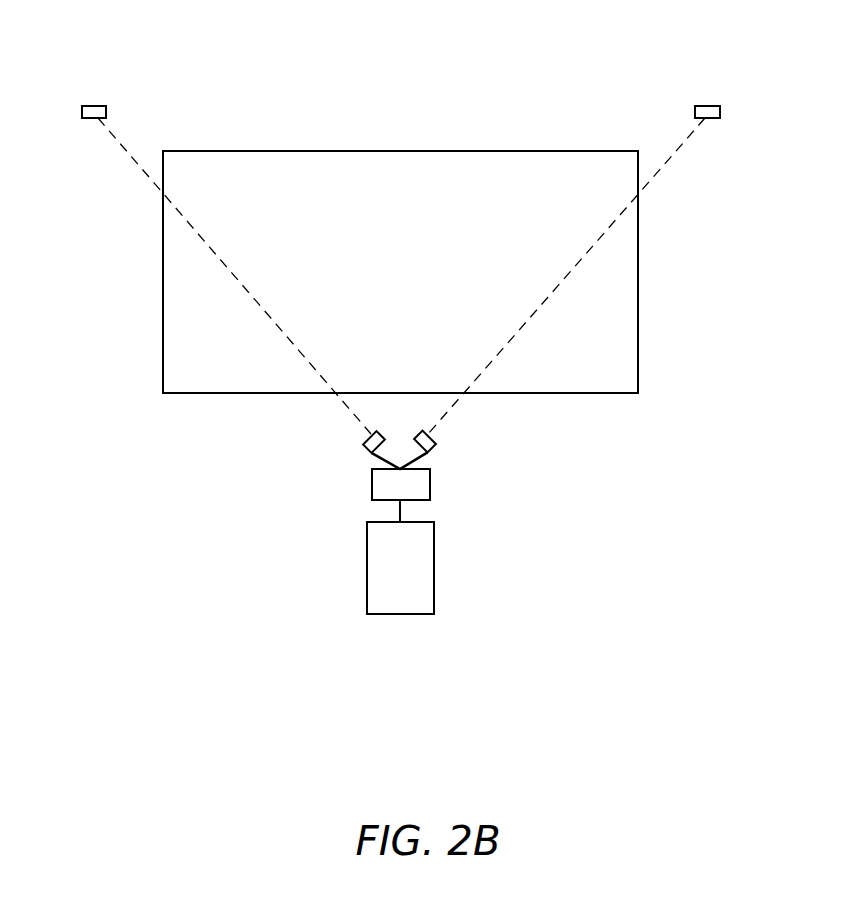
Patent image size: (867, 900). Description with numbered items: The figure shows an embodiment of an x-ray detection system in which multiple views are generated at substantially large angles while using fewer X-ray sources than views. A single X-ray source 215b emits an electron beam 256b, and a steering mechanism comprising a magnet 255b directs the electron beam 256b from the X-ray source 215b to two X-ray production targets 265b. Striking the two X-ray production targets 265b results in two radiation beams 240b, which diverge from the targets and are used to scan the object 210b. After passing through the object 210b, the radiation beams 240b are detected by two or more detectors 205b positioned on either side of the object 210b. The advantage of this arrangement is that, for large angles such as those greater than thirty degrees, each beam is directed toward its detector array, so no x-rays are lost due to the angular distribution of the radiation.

The detectors 205b is at (710, 105).
The object 210b is at (273, 150).
The radiation beams 240b is at (240, 283).
The X-ray production targets 265b is at (382, 443).
The magnet 255b is at (378, 483).
The electron beam 256b is at (400, 518).
The X-ray source 215b is at (423, 588).